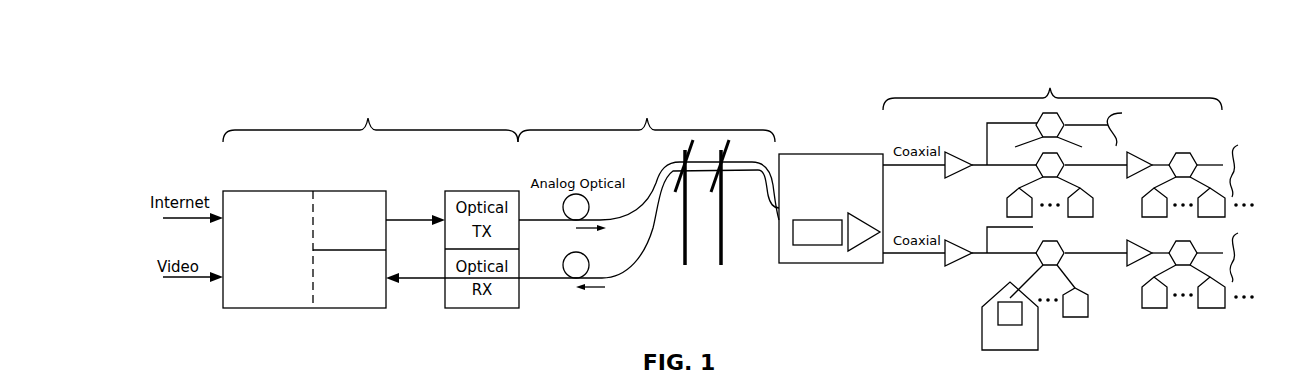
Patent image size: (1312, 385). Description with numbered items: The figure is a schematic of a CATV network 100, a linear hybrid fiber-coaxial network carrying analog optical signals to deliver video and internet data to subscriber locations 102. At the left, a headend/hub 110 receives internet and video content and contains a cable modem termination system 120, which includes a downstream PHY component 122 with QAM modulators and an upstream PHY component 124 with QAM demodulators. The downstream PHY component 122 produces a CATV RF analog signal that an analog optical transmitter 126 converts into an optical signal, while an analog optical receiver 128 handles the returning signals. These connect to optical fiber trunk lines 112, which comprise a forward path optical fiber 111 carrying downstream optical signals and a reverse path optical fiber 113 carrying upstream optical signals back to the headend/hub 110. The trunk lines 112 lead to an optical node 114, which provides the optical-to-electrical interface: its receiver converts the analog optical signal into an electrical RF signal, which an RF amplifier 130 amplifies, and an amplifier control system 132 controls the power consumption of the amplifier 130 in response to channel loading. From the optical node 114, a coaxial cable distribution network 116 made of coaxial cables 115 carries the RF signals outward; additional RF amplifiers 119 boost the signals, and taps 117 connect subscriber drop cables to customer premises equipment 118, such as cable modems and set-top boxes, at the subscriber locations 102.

The CATV network 100 is at (262, 111).
The headend/hub 110 is at (370, 120).
The optical fiber trunk lines 112 is at (648, 188).
The optical node 114 is at (827, 153).
The coaxial cable distribution network 116 is at (1052, 89).
The cable modem termination system 120 is at (250, 309).
The downstream PHY component 122 is at (363, 197).
The upstream PHY component 124 is at (343, 302).
The analog optical transmitter 126 is at (442, 244).
The analog optical receiver 128 is at (444, 282).
The forward path optical fiber 111 is at (546, 225).
The reverse path optical fiber 113 is at (546, 283).
The amplifier control system 132 is at (793, 233).
The RF amplifier 130 is at (865, 248).
The coaxial cables 115 is at (905, 168).
The RF amplifiers 119 is at (963, 177).
The taps 117 is at (1035, 262).
The customer premises equipment 118 is at (988, 322).
The subscriber locations 102 is at (1041, 326).